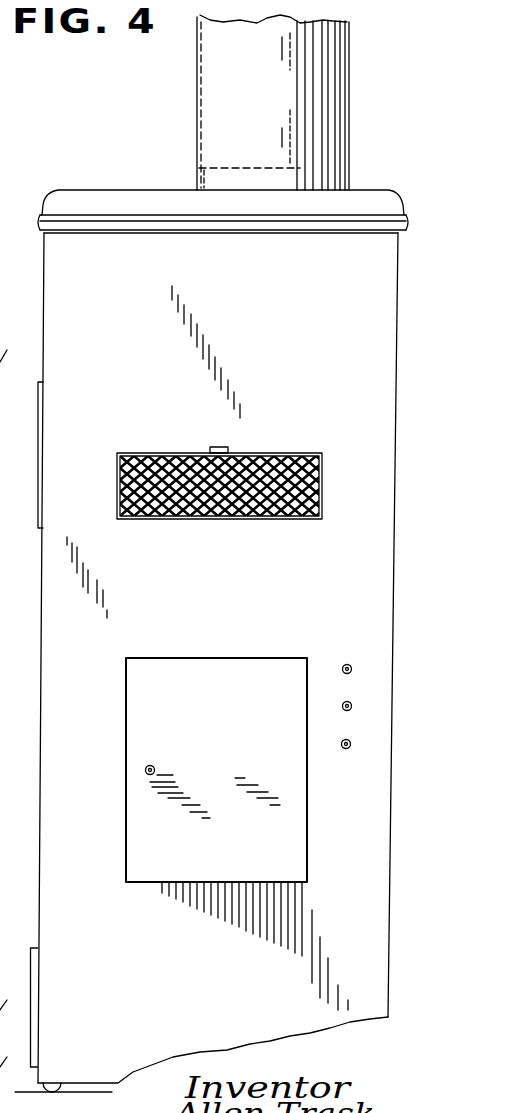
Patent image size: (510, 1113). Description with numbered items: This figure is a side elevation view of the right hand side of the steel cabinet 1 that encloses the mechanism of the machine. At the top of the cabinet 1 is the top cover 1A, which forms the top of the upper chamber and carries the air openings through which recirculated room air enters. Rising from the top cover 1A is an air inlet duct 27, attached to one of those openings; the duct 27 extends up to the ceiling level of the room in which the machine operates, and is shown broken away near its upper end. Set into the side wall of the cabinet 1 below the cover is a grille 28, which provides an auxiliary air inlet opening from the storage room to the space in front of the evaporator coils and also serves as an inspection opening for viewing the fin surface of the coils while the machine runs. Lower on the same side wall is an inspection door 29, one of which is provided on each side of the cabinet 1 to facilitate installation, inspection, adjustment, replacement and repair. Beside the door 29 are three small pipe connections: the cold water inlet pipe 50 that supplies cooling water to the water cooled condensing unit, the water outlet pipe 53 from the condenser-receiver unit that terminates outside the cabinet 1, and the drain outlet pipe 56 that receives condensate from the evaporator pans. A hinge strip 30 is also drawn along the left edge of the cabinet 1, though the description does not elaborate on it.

The steel cabinet 1 is at (128, 292).
The top cover 1A is at (133, 162).
The air inlet duct 27 is at (197, 104).
The grille 28 is at (270, 458).
The inspection door 29 is at (222, 672).
The hinge 30 is at (21, 724).
The cold water inlet pipe 50 is at (347, 749).
The water outlet pipe 53 is at (360, 696).
The drain outlet pipe 56 is at (349, 664).